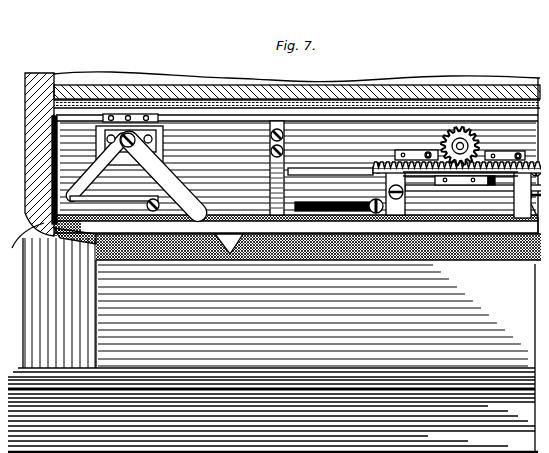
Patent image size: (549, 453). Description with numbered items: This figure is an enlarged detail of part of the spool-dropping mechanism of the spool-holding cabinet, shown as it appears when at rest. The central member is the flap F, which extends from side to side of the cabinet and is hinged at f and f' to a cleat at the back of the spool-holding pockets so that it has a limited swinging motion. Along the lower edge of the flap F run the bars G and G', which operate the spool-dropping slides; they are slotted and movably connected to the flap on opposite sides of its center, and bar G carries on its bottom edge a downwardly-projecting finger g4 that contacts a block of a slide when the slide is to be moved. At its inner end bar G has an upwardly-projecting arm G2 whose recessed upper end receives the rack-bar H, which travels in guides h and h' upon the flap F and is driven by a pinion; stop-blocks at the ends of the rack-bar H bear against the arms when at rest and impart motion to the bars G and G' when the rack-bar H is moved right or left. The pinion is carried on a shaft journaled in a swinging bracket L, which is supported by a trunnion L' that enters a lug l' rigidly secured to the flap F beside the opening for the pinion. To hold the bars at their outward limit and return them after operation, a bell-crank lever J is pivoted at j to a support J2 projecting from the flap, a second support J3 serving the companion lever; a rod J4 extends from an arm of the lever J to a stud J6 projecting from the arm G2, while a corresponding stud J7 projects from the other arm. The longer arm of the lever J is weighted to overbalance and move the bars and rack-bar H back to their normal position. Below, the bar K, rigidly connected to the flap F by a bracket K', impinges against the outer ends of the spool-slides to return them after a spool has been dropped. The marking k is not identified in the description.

The hinge f' is at (141, 87).
The hinge f is at (287, 161).
The flap F is at (297, 162).
The bell-crank lever J is at (163, 176).
The support J2 is at (98, 167).
The pivot j is at (129, 146).
The support J3 is at (229, 244).
The rod J4 is at (215, 172).
The stud J6 is at (407, 195).
The stud J7 is at (514, 193).
The finger g4 is at (164, 205).
The bar G is at (296, 217).
The bar G' is at (536, 221).
The arm G2 is at (444, 189).
The bar K is at (297, 240).
The bracket K' is at (330, 166).
The wall curve k is at (33, 160).
The swinging bracket L is at (460, 136).
The trunnion L' is at (456, 142).
The lug l' is at (420, 147).
The guide h' is at (512, 147).
The rack-bar H is at (457, 170).
The guide h is at (418, 199).